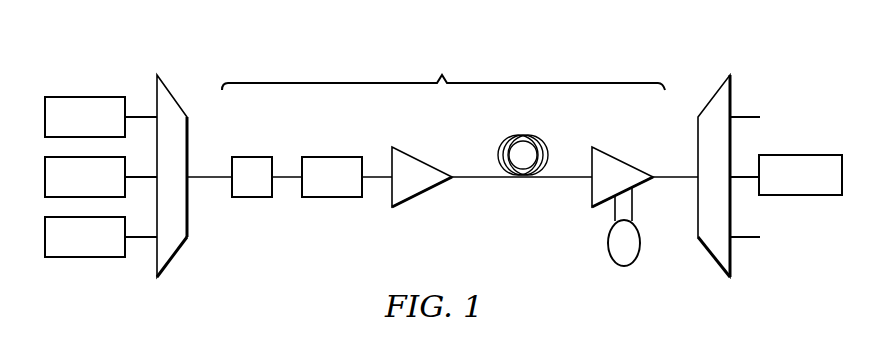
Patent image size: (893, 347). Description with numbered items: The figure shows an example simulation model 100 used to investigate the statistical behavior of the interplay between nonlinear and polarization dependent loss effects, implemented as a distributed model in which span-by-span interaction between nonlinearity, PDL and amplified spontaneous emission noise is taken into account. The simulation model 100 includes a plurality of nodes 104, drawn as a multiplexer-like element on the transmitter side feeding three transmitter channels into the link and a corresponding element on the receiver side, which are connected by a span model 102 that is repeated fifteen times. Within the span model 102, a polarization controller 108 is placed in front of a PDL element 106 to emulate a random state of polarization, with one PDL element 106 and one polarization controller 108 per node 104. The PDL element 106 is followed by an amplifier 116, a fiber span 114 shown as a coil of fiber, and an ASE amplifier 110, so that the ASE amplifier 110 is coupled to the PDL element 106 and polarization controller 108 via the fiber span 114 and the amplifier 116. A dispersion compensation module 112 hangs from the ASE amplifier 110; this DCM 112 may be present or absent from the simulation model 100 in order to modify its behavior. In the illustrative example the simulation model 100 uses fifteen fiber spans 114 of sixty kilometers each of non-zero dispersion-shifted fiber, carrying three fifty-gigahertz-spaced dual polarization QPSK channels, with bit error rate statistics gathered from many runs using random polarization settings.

The simulation model 100 is at (146, 54).
The span model 102 is at (443, 58).
The node 104 is at (155, 259).
The PDL element 106 is at (330, 157).
The polarization controller 108 is at (250, 157).
The ASE amplifier 110 is at (592, 190).
The dispersion compensation module 112 is at (638, 252).
The fiber span 114 is at (498, 152).
The amplifier 116 is at (424, 198).